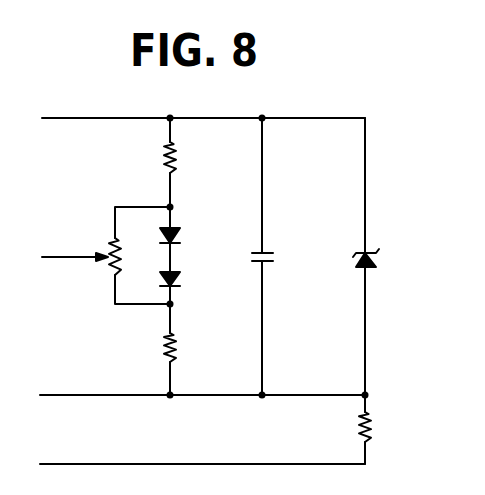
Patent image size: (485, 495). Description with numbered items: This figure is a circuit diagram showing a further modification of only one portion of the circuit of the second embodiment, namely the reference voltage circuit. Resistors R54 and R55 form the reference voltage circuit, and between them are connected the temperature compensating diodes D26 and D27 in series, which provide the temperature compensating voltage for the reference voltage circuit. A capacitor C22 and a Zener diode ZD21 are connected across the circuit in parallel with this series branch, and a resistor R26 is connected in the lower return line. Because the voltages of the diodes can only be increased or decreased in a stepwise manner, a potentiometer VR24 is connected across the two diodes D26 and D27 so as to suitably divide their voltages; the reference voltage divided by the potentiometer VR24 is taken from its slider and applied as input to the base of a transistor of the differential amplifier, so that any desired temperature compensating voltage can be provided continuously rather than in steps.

The resistor R54 is at (176, 156).
The temperature compensating diode D26 is at (181, 238).
The temperature compensating diode D27 is at (182, 281).
The potentiometer VR24 is at (108, 273).
The resistor R55 is at (176, 345).
The capacitor C22 is at (274, 257).
The Zener diode ZD21 is at (380, 257).
The resistor R26 is at (372, 419).